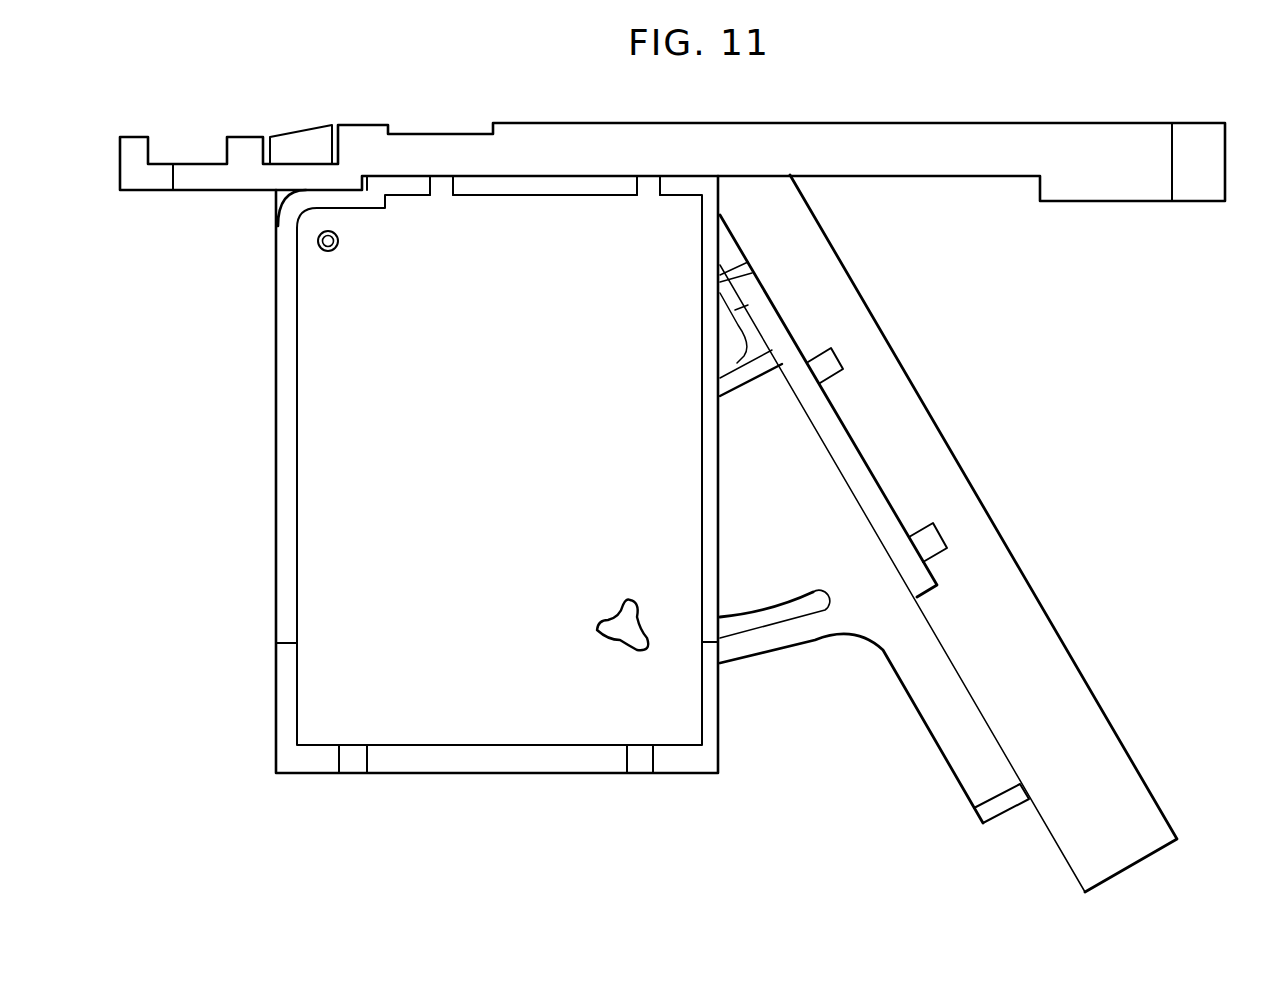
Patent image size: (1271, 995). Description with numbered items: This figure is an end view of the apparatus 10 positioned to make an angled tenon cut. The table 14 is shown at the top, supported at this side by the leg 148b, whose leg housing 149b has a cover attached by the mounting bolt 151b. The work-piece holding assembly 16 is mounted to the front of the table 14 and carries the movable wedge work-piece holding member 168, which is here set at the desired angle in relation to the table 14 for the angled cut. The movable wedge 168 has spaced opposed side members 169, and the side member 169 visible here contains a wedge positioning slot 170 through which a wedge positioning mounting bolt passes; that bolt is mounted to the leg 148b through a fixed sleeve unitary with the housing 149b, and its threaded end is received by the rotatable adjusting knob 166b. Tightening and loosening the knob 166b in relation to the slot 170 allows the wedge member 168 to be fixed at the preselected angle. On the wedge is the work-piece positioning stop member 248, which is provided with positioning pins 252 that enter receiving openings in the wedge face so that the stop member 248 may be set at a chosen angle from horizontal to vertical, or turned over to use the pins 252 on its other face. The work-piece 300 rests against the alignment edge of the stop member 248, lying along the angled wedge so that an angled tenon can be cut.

The apparatus 10 is at (230, 272).
The table 14 is at (892, 142).
The work-piece holding assembly 16 is at (968, 372).
The leg 148b is at (258, 511).
The leg housing 149b is at (345, 415).
The mounting bolt 151b is at (317, 241).
The rotatable adjusting knob 166b is at (616, 644).
The movable wedge work-piece holding member 168 is at (838, 646).
The side member 169 is at (798, 529).
The wedge positioning slot 170 is at (800, 614).
The work-piece positioning stop member 248 is at (882, 527).
The positioning pin 252 is at (840, 351).
The work-piece 300 is at (957, 452).